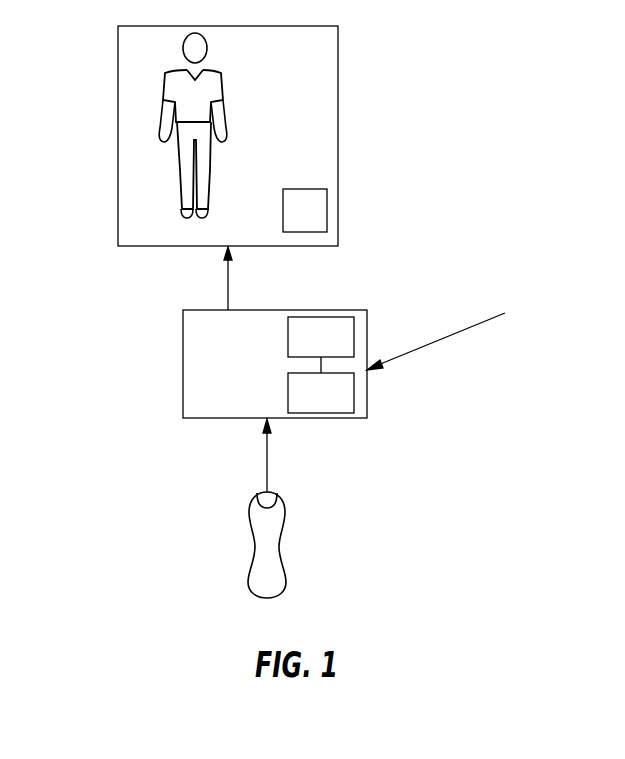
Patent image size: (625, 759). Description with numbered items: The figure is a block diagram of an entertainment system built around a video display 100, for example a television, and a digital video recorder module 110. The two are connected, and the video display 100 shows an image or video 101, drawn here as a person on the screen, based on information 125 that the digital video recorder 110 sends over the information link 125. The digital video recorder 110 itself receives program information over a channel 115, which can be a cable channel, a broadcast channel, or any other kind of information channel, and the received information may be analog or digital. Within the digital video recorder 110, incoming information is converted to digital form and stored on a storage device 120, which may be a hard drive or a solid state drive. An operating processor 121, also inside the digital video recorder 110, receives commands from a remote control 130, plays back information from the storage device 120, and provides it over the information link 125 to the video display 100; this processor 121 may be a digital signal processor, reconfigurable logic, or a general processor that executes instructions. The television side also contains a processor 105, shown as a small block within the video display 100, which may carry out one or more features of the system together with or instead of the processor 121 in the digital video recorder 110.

The video display 100 is at (118, 72).
The image or video 101 is at (223, 80).
The processor in the TV 105 is at (327, 198).
The digital video recorder module 110 is at (183, 342).
The channel 115 is at (475, 329).
The storage device 120 is at (322, 416).
The operating processor 121 is at (322, 312).
The information link 125 is at (228, 285).
The remote control 130 is at (250, 520).